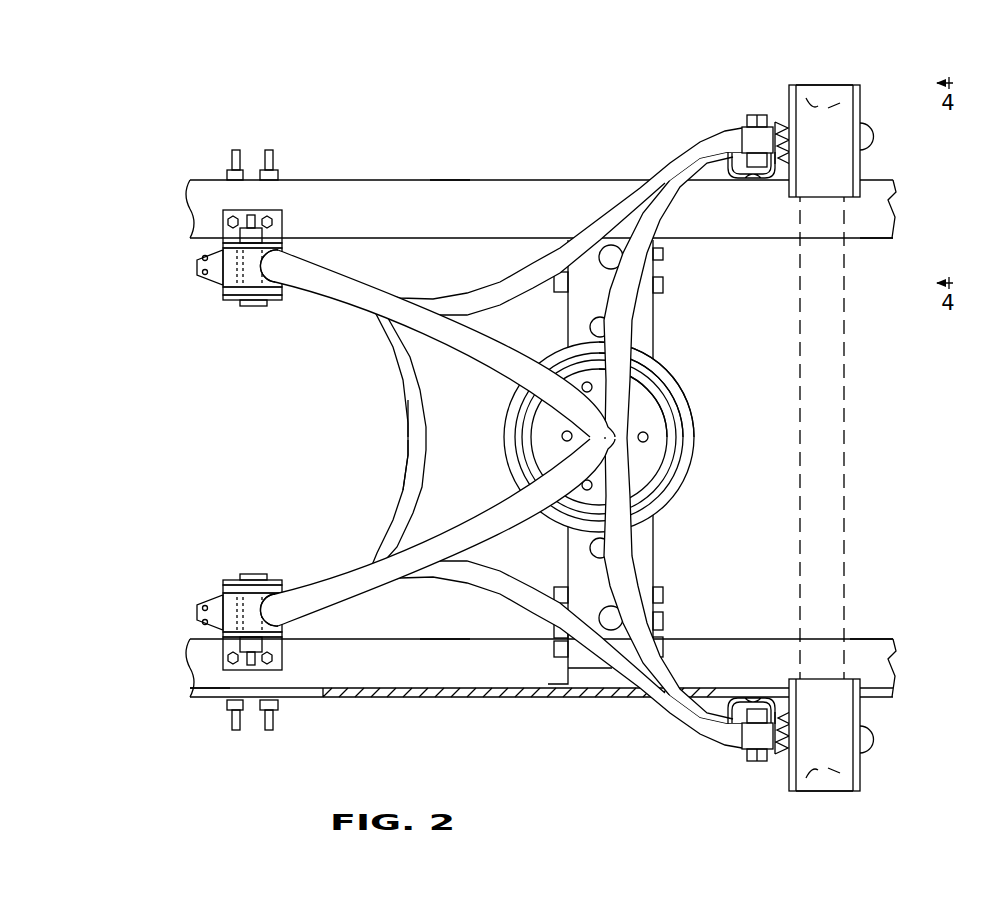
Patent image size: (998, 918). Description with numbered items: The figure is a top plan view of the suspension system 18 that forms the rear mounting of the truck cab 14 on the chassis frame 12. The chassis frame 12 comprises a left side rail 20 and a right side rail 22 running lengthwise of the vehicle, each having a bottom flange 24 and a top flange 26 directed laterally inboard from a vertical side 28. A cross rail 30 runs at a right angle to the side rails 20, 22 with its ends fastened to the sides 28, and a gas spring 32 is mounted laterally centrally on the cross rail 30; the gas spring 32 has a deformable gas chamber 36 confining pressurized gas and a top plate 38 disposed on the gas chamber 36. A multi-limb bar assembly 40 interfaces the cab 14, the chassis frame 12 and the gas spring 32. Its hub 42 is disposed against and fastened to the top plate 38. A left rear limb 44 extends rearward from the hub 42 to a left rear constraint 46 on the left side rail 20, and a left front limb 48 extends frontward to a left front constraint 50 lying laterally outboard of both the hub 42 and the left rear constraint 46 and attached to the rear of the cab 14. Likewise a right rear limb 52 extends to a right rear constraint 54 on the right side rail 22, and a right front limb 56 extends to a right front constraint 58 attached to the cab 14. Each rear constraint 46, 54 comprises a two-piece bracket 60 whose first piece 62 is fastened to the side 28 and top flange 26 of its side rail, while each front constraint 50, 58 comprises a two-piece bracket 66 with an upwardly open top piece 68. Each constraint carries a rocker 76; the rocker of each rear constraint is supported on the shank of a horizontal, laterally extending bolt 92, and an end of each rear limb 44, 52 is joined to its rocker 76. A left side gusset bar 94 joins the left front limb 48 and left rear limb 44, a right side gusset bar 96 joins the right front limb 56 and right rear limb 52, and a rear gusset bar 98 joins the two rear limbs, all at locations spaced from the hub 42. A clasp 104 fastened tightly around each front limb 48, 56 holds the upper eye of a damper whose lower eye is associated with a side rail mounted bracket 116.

The chassis frame 12 is at (894, 200).
The truck cab 14 is at (846, 368).
The suspension system 18 is at (368, 380).
The left side rail 20 is at (892, 238).
The right side rail 22 is at (893, 636).
The bottom flange 24 is at (446, 652).
The top flange 26 is at (452, 192).
The vertical side 28 is at (488, 700).
The cross rail 30 is at (653, 322).
The gas spring 32 is at (697, 419).
The deformable gas chamber 36 is at (692, 466).
The top plate 38 is at (678, 437).
The multi-limb bar assembly 40 is at (405, 432).
The hub 42 is at (662, 398).
The left rear limb 44 is at (354, 274).
The left rear constraint 46 is at (218, 300).
The left front limb 48 is at (660, 207).
The left front constraint 50 is at (784, 121).
The right rear limb 52 is at (362, 600).
The right rear constraint 54 is at (220, 585).
The right front limb 56 is at (696, 632).
The right front constraint 58 is at (782, 763).
The two-piece bracket 60 is at (289, 292).
The first piece 62 is at (222, 226).
The two-piece bracket 66 is at (862, 86).
The top piece 68 is at (830, 85).
The rocker 76 is at (873, 137).
The bolt 92 is at (246, 306).
The left side gusset bar 94 is at (503, 282).
The right side gusset bar 96 is at (522, 605).
The rear gusset bar 98 is at (405, 457).
The clasp 104 is at (754, 138).
The side rail mounted bracket 116 is at (776, 182).